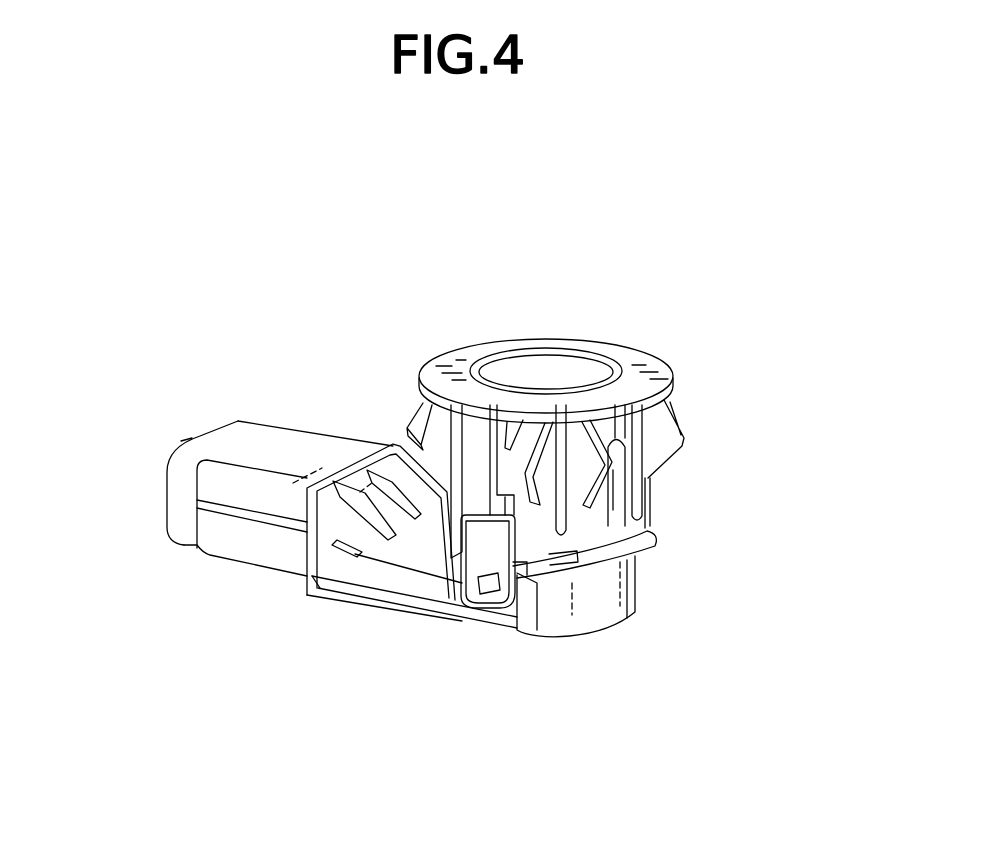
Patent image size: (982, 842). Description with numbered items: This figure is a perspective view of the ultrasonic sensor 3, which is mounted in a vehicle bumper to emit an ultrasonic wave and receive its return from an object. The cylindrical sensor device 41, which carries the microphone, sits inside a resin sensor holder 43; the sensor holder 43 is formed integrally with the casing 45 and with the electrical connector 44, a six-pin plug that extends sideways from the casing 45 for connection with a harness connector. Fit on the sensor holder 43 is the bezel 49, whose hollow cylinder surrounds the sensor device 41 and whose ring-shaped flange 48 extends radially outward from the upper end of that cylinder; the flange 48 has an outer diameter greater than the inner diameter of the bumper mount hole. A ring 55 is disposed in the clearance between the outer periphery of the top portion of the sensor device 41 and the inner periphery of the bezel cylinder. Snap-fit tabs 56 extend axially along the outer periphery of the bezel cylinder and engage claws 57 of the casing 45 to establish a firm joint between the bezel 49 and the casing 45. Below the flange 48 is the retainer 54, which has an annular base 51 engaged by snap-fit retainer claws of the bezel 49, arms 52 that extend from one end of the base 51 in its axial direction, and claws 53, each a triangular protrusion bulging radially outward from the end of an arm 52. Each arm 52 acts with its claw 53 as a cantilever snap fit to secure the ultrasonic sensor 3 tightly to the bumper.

The ultrasonic sensor 3 is at (189, 600).
The sensor device 41 is at (562, 363).
The sensor holder 43 is at (622, 628).
The electrical connector 44 is at (167, 480).
The casing 45 is at (308, 612).
The flange 48 is at (470, 355).
The bezel 49 is at (712, 332).
The annular base 51 is at (600, 553).
The arms 52 is at (650, 496).
The claws 53 is at (678, 409).
The retainer 54 is at (386, 398).
The ring 55 is at (621, 365).
The snap-fit tabs 56 is at (480, 545).
The claws 57 is at (487, 588).